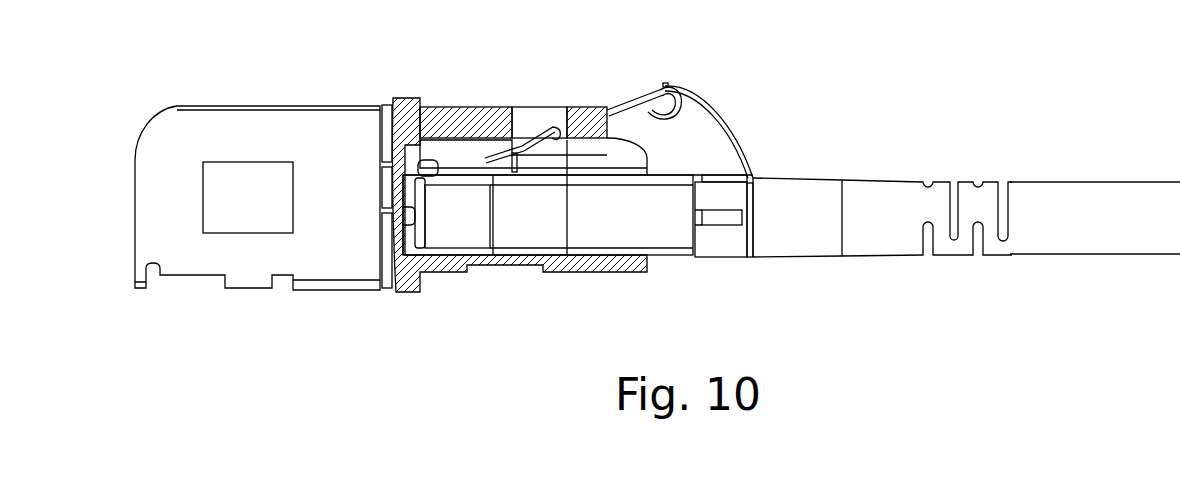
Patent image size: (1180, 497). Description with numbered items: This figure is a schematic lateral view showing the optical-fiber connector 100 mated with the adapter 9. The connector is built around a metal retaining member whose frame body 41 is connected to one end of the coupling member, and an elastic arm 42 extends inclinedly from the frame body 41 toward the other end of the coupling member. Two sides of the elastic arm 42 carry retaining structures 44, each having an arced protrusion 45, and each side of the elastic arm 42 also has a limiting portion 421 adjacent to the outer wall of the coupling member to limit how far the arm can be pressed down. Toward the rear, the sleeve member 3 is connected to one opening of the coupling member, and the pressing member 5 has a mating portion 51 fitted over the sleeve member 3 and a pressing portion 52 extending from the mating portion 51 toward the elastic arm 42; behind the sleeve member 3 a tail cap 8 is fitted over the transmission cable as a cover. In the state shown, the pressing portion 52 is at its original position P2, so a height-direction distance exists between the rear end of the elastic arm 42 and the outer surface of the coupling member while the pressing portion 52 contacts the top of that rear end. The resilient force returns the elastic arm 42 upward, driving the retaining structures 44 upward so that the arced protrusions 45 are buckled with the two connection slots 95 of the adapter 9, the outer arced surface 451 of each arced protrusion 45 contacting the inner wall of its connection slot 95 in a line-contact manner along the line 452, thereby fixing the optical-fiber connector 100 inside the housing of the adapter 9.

The adapter 9 is at (345, 140).
The connection slot 95 is at (523, 120).
The arced protrusion 45 is at (514, 114).
The outer arced surface 451 is at (556, 128).
The line 452 is at (583, 128).
The elastic arm 42 is at (660, 92).
The original position P2 is at (666, 83).
The pressing portion 52 is at (697, 90).
The pressing member 5 is at (733, 171).
The optical-fiber connector 100 is at (1032, 182).
The frame body 41 is at (463, 215).
The limiting portion 421 is at (510, 160).
The retaining structure 44 is at (568, 140).
The sleeve member 3 is at (718, 235).
The mating portion 51 is at (752, 242).
The tail cap 8 is at (880, 238).